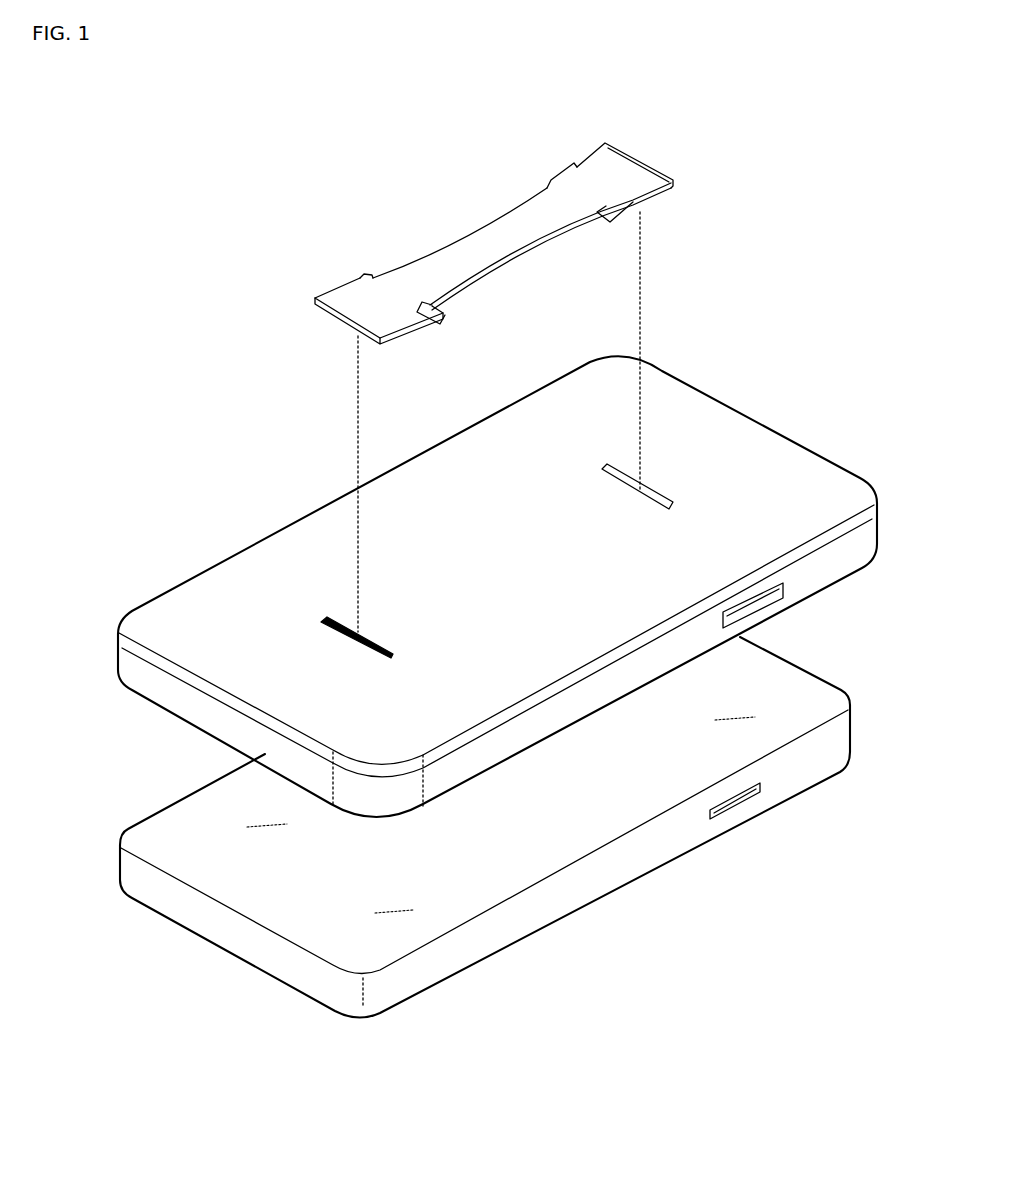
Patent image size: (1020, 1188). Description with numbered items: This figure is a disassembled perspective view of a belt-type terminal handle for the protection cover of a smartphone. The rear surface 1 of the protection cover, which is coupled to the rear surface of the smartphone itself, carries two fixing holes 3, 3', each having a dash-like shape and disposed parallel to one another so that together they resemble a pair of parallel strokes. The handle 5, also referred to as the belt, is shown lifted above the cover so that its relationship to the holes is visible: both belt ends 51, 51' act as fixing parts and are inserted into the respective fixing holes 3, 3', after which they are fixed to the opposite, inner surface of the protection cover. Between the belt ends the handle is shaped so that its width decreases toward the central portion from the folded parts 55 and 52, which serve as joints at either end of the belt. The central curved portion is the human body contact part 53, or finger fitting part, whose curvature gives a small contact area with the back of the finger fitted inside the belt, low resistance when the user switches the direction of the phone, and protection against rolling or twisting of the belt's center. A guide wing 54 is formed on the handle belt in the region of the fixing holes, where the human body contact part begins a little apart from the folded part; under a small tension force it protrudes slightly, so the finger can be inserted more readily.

The rear surface 1 is at (203, 600).
The fixing hole 3 is at (700, 360).
The fixing hole 3' is at (320, 497).
The handle 5 is at (513, 214).
The belt end 51 is at (506, 317).
The belt end 51' is at (662, 259).
The folded part 52 is at (347, 295).
The human body contact part 53 is at (469, 238).
The guide wing 54 is at (356, 277).
The folded part 55 is at (670, 178).